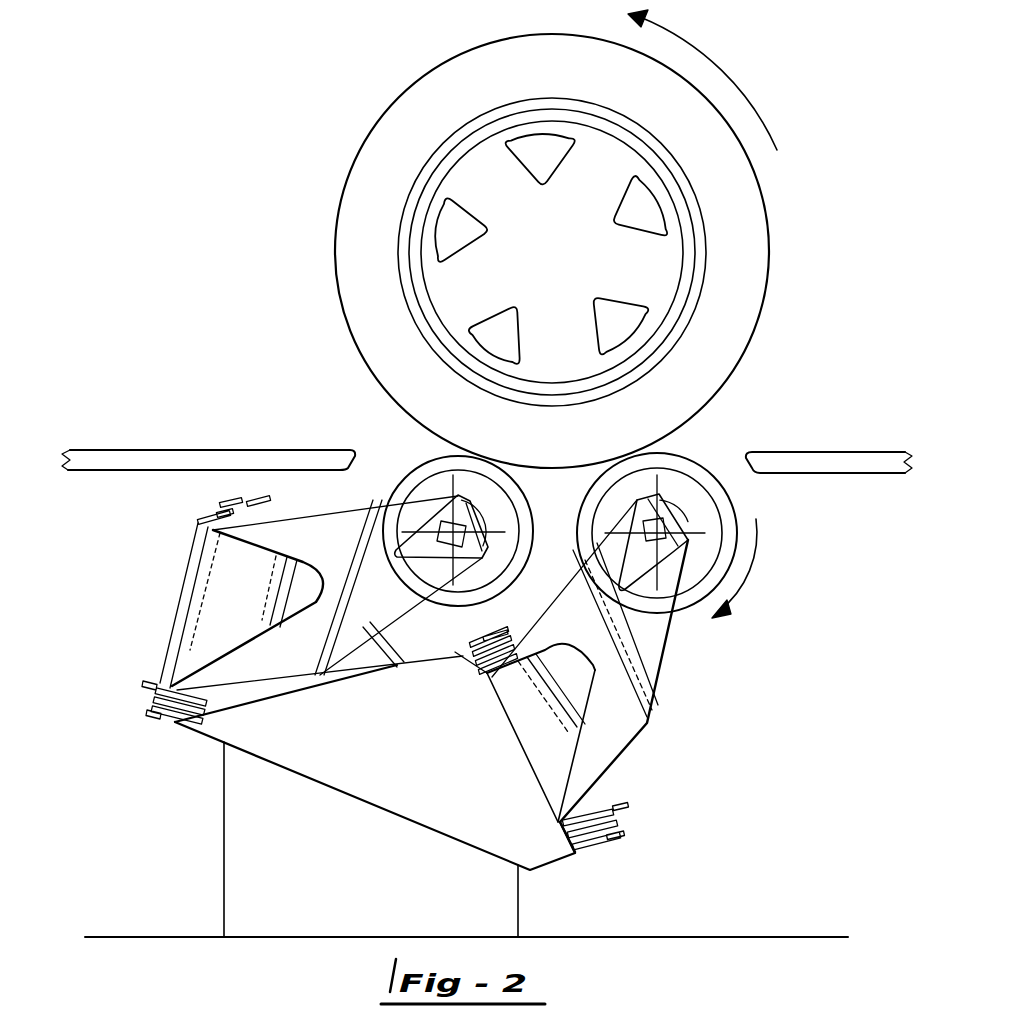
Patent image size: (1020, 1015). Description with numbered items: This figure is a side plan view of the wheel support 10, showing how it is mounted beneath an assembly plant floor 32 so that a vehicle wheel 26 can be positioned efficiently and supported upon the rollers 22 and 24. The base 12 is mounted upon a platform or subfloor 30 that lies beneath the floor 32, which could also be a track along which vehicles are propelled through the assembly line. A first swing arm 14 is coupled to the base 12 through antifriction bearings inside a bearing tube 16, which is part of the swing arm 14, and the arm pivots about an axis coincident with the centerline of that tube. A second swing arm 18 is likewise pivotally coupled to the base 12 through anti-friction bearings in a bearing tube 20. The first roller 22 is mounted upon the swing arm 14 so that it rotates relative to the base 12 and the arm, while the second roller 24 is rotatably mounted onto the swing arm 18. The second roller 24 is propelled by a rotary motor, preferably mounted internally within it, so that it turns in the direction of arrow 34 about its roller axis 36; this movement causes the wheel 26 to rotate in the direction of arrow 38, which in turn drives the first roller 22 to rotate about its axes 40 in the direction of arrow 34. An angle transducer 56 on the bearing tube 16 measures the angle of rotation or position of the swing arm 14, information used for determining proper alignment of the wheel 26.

The wheel support 10 is at (174, 543).
The base 12 is at (517, 843).
The swing arm 14 is at (402, 590).
The bearing tube 16 is at (208, 618).
The second swing arm 18 is at (622, 655).
The bearing tube 20 is at (540, 708).
The first roller 22 is at (519, 528).
The second roller 24 is at (695, 470).
The wheel 26 is at (733, 214).
The subfloor 30 is at (656, 935).
The floor 32 is at (160, 450).
The arrow 34 is at (744, 583).
The roller axis 36 is at (688, 510).
The arrow 38 is at (720, 67).
The axes 40 is at (441, 527).
The angle transducer 56 is at (272, 496).